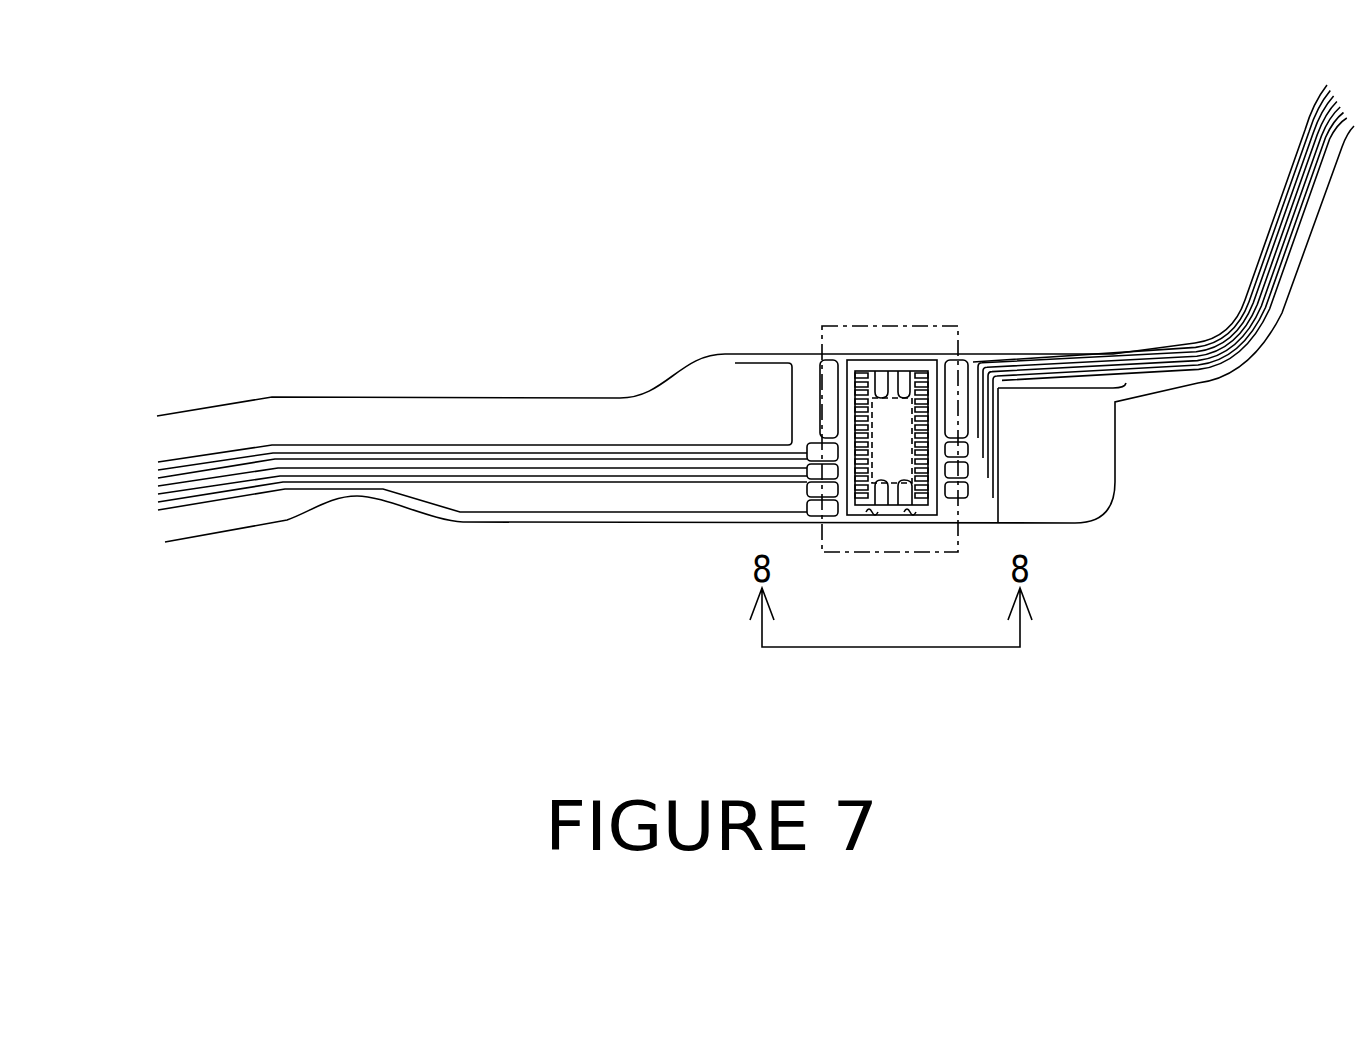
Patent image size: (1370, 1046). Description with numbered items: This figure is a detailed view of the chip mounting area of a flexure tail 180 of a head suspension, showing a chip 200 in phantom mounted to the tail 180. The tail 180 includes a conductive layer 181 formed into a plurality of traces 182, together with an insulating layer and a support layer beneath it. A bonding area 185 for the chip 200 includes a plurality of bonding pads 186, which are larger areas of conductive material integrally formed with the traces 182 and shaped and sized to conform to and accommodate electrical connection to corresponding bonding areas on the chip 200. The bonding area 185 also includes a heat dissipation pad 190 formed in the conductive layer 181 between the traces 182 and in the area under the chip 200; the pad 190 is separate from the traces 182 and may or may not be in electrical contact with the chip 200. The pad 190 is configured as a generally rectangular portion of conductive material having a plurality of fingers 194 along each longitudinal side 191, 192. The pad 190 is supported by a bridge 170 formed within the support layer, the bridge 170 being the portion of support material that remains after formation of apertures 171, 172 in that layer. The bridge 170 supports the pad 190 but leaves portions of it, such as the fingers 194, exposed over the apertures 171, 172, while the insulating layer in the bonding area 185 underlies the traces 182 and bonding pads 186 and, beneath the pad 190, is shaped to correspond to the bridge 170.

The bridge 170 is at (868, 508).
The aperture 171 is at (910, 514).
The aperture 172 is at (873, 514).
The tail 180 is at (1100, 515).
The conductive layer 181 is at (534, 492).
The traces 182 is at (288, 460).
The bonding area 185 is at (835, 392).
The bonding pads 186 is at (805, 407).
The heat dissipation pad 190 is at (910, 370).
The longitudinal side 191 is at (921, 507).
The longitudinal side 192 is at (857, 385).
The fingers 194 is at (888, 460).
The chip 200 is at (930, 327).